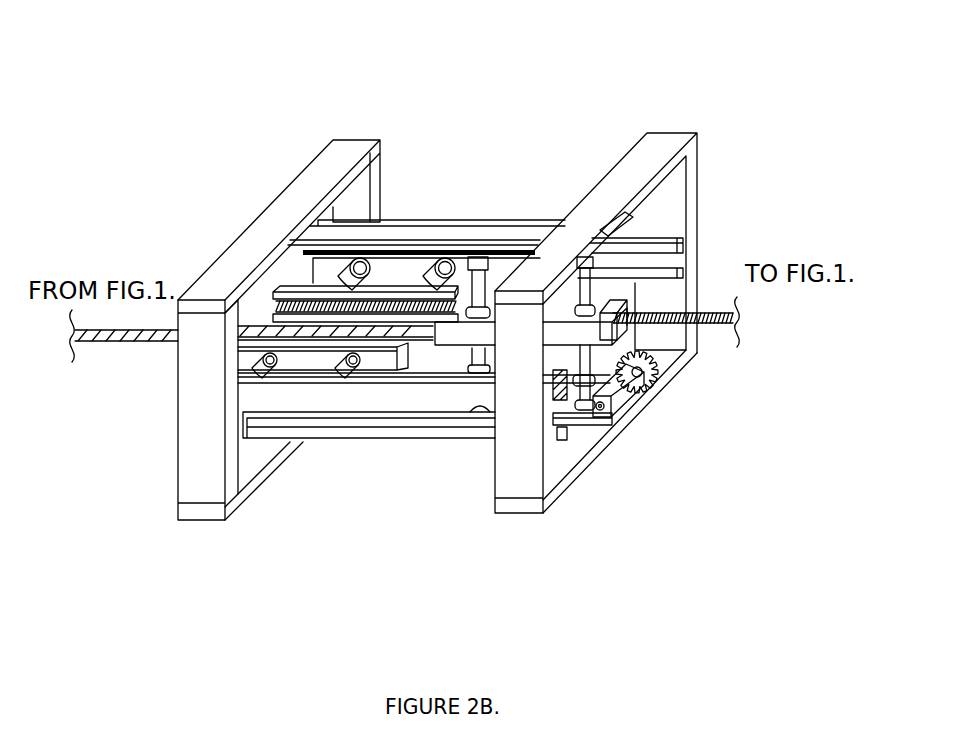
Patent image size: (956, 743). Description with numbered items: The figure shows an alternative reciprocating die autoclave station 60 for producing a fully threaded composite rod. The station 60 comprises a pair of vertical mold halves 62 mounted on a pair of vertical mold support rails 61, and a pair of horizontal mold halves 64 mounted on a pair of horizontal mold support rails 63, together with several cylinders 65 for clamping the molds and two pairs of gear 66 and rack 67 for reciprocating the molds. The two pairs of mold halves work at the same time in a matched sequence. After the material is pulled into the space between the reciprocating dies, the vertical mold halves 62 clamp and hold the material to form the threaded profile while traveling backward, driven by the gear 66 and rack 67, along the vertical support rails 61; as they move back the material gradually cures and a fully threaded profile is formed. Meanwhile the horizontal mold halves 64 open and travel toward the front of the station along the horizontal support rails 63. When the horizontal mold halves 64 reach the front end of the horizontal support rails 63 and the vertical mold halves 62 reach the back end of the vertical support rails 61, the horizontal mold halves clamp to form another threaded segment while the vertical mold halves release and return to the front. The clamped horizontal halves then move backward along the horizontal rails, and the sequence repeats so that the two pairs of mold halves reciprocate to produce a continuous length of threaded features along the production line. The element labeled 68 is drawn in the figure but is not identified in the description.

The reciprocating die autoclave station 60 is at (445, 37).
The vertical mold support rails 61 is at (578, 415).
The vertical mold halves 62 is at (463, 328).
The horizontal mold support rails 63 is at (337, 400).
The horizontal mold halves 64 is at (373, 290).
The cylinders 65 is at (478, 262).
The gear 66 is at (655, 365).
The rack 67 is at (644, 395).
The wire guide 68 is at (613, 320).